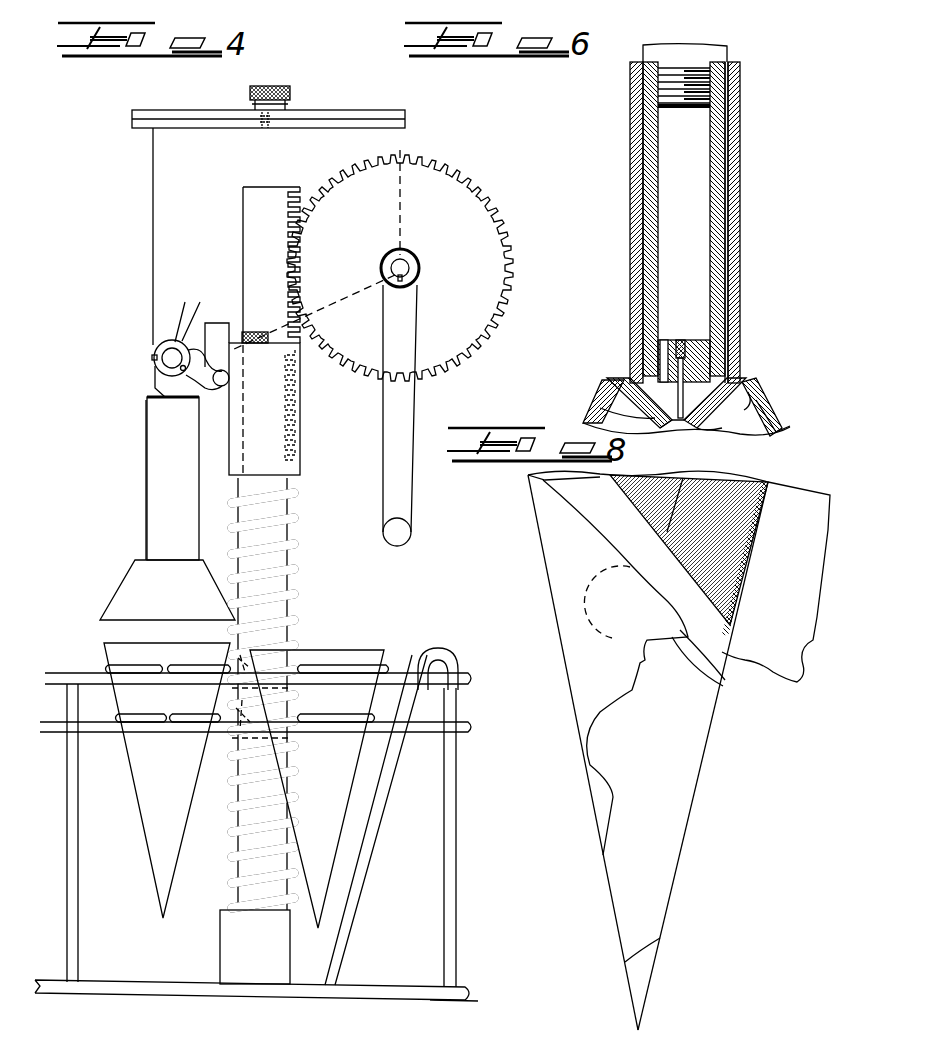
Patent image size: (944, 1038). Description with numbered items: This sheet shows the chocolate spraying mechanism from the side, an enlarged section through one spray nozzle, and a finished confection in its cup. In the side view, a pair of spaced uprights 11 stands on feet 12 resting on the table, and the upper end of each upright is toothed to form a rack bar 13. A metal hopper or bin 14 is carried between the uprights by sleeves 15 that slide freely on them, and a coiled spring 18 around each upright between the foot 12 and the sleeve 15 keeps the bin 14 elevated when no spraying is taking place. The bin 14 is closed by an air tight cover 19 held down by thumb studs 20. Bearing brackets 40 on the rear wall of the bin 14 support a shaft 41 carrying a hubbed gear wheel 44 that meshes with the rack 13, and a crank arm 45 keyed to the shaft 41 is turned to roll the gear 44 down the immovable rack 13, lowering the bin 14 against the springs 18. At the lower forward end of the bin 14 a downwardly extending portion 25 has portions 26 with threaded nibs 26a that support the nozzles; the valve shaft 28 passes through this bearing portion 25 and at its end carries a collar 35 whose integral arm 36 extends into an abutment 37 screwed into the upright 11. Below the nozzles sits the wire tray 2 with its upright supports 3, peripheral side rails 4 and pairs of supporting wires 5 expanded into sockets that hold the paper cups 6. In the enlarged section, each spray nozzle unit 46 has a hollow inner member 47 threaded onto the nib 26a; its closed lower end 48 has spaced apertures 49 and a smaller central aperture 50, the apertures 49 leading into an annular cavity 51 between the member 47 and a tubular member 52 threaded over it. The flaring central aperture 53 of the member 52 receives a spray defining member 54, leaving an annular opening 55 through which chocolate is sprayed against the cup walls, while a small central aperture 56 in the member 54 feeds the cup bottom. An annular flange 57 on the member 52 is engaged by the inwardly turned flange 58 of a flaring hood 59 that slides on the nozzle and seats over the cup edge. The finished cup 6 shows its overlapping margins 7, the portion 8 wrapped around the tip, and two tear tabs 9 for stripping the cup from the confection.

In FIG. 4, the tray 2 is at (482, 768).
In FIG. 4, the upright supports 3 is at (458, 838).
In FIG. 4, the peripheral side rails 4 is at (475, 690).
In FIG. 4, the supporting members 5 is at (320, 720).
In FIG. 4, the cup 6 is at (145, 845).
In FIG. 8, the cup 6 is at (578, 638).
In FIG. 8, the overlapping margins 7 is at (727, 676).
In FIG. 8, the margin tip portion 8 is at (635, 988).
In FIG. 8, the tear tabs 9 is at (630, 625).
In FIG. 4, the uprights 11 is at (276, 590).
In FIG. 4, the foot 12 is at (262, 960).
In FIG. 4, the rack bar 13 is at (255, 243).
In FIG. 4, the bin 14 is at (153, 215).
In FIG. 4, the sleeves 15 is at (272, 447).
In FIG. 4, the coiled spring 18 is at (286, 628).
In FIG. 4, the cover 19 is at (335, 110).
In FIG. 4, the thumb studs 20 is at (282, 90).
In FIG. 4, the downwardly extending portion 25 is at (162, 390).
In FIG. 6, the portions 26 is at (703, 50).
In FIG. 6, the threaded nibs 26a is at (690, 88).
In FIG. 4, the shaft 28 is at (170, 340).
In FIG. 4, the collar 35 is at (205, 310).
In FIG. 4, the arm 36 is at (213, 386).
In FIG. 4, the abutment 37 is at (212, 362).
In FIG. 4, the bearing brackets 40 is at (397, 255).
In FIG. 4, the shaft 41 is at (409, 268).
In FIG. 4, the hubbed gear wheel 44 is at (486, 300).
In FIG. 4, the crank arm 45 is at (402, 440).
In FIG. 4, the spray nozzle unit 46 is at (165, 522).
In FIG. 6, the spray nozzle unit 46 is at (748, 197).
In FIG. 6, the hollow inner member 47 is at (728, 262).
In FIG. 6, the closed lower end 48 is at (668, 345).
In FIG. 6, the spaced apertures 49 is at (700, 362).
In FIG. 6, the central aperture 50 is at (680, 350).
In FIG. 6, the annular cavity 51 is at (740, 385).
In FIG. 6, the tubular member 52 is at (730, 318).
In FIG. 6, the central aperture 53 is at (712, 422).
In FIG. 6, the spray defining member 54 is at (672, 420).
In FIG. 6, the annular opening 55 is at (608, 410).
In FIG. 6, the central aperture 56 is at (686, 422).
In FIG. 6, the annular flange 57 is at (768, 410).
In FIG. 6, the inwardly turned flange 58 is at (752, 394).
In FIG. 4, the hood 59 is at (145, 583).
In FIG. 6, the hood 59 is at (782, 434).